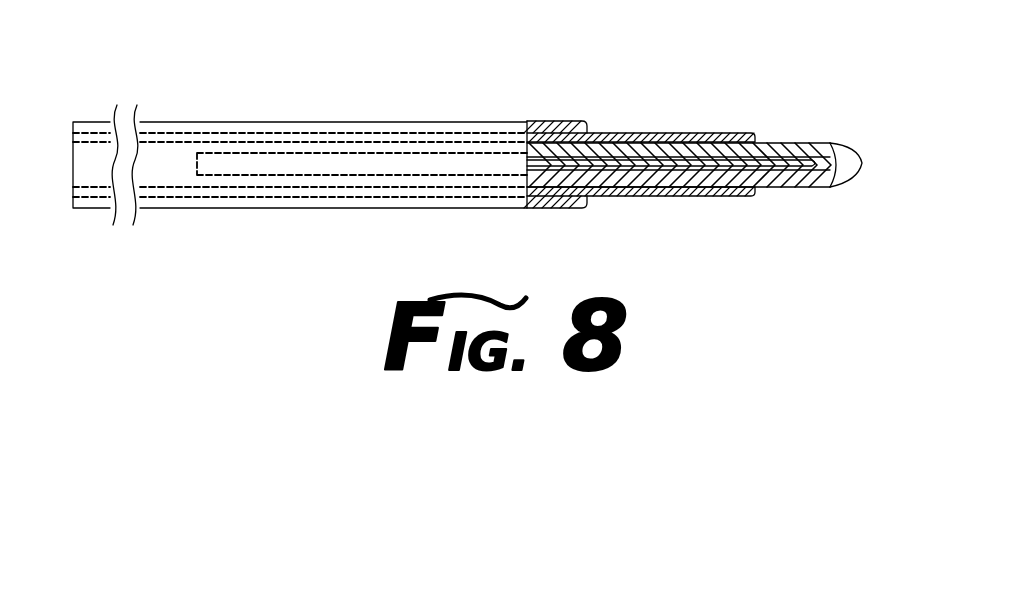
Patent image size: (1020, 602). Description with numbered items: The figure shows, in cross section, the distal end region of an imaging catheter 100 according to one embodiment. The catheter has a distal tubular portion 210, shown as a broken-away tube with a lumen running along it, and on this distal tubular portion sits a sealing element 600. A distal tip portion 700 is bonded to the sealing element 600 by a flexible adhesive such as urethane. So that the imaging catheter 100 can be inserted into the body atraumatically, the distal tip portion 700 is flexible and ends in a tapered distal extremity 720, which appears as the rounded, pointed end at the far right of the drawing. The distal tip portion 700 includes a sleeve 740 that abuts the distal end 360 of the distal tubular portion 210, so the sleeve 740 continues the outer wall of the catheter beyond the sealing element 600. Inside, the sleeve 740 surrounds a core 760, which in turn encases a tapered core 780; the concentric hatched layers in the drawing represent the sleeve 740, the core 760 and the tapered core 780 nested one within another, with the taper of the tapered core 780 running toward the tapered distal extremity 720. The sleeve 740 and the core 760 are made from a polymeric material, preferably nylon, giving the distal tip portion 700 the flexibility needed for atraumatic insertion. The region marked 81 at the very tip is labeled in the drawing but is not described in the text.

The imaging catheter 100 is at (314, 89).
The distal tip portion 210 is at (360, 136).
The sealing element 600 is at (550, 121).
The distal end 360 is at (597, 133).
The tapered core 780 is at (632, 157).
The sleeve 740 is at (703, 133).
The distal tip portion 700 is at (761, 95).
The core 760 is at (782, 148).
The tip end cap 81 is at (847, 156).
The tapered distal extremity 720 is at (856, 176).